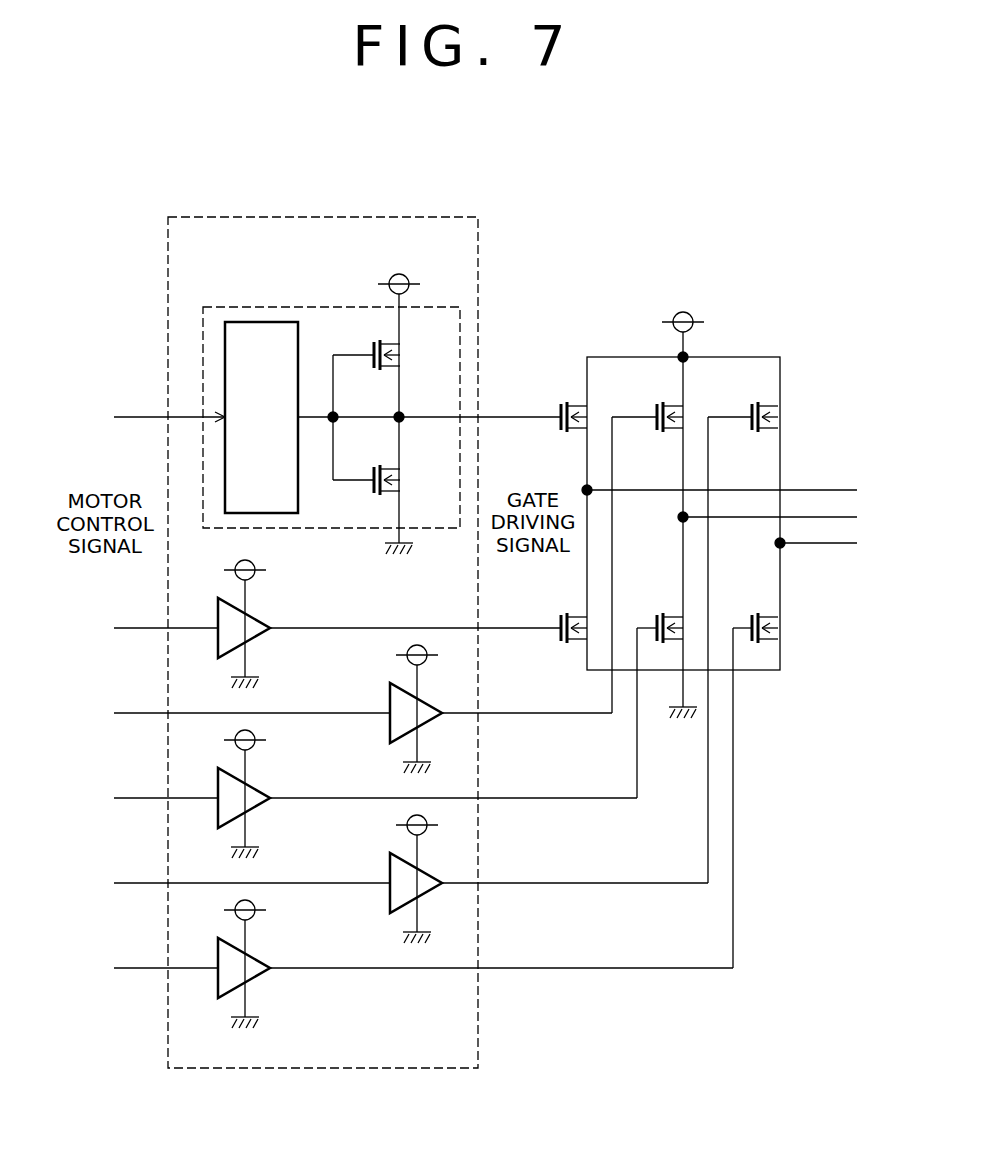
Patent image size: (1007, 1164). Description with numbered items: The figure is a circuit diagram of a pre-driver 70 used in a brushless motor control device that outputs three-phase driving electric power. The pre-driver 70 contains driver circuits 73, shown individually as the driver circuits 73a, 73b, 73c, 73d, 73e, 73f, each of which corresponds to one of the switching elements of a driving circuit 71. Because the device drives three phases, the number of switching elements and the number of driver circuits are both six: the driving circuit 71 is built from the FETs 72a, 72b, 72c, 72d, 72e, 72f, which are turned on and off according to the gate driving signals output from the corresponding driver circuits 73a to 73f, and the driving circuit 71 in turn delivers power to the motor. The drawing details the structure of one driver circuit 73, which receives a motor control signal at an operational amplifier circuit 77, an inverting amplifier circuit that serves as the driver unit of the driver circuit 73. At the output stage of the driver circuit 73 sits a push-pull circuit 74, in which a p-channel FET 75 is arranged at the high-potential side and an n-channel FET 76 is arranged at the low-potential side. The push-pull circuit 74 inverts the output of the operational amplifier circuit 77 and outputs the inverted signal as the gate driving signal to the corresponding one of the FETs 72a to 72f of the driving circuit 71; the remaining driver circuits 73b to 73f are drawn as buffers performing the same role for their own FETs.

The pre-driver 70 is at (318, 216).
The driving circuit 71 is at (612, 302).
The FET 72a is at (567, 402).
The FET 72b is at (663, 402).
The FET 72c is at (758, 402).
The FET 72d is at (567, 645).
The FET 72e is at (663, 613).
The FET 72f is at (758, 613).
The driver circuit 73 is at (330, 794).
The driver circuit 73a is at (228, 307).
The driver circuit 73b is at (390, 700).
The driver circuit 73c is at (390, 870).
The driver circuit 73d is at (283, 611).
The driver circuit 73e is at (283, 781).
The driver circuit 73f is at (262, 958).
The push-pull circuit 74 is at (399, 374).
The p-channel FET 75 is at (374, 340).
The n-channel FET 76 is at (380, 465).
The operational amplifier circuit 77 is at (262, 322).